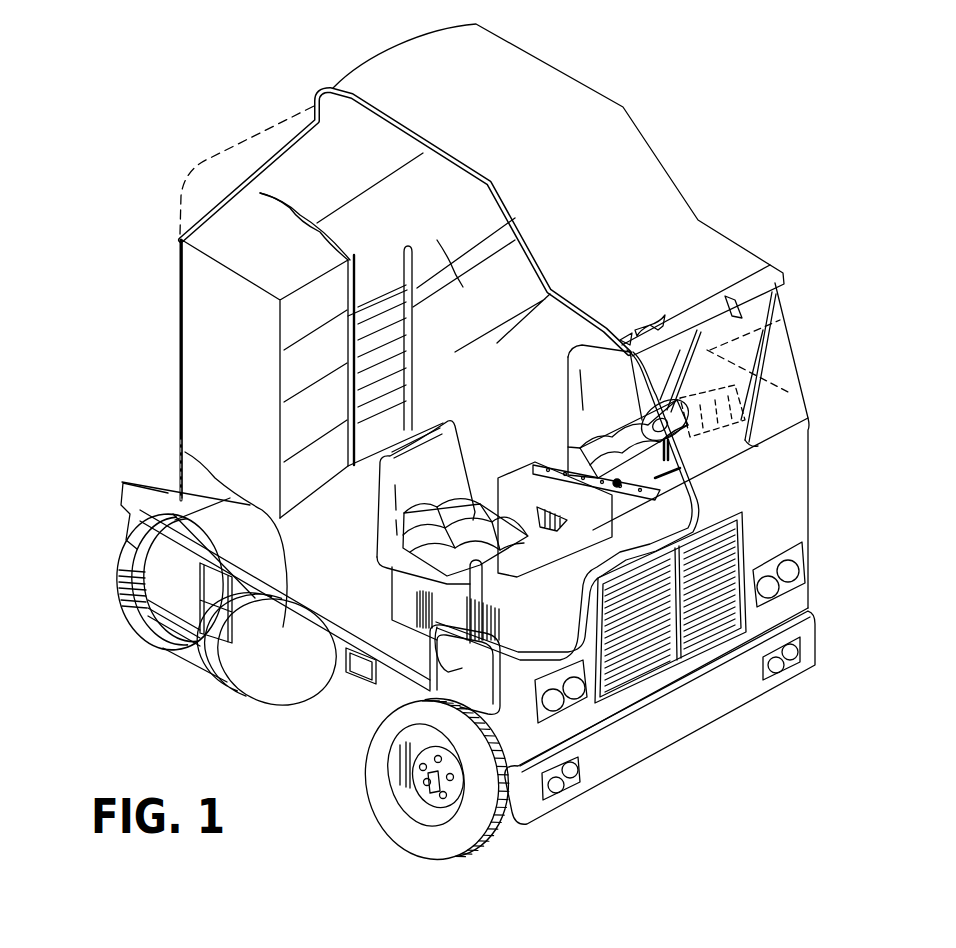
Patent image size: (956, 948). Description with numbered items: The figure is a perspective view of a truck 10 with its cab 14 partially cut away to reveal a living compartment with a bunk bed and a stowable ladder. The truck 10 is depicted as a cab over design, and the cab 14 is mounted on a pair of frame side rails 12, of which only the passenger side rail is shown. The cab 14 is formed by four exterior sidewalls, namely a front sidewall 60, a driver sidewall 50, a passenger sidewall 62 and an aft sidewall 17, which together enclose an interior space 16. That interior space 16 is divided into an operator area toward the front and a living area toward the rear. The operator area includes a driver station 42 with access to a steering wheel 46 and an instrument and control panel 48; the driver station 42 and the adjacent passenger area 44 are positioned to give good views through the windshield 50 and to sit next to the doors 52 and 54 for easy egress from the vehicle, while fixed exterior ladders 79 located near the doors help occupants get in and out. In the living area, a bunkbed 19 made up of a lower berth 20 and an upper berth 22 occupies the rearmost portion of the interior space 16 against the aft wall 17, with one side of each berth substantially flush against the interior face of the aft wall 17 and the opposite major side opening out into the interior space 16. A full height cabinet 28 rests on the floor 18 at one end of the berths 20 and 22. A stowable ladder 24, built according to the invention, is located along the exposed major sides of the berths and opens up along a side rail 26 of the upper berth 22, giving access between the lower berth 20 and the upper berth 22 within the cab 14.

The truck 10 is at (243, 726).
The frame side rails 12 is at (125, 540).
The cab 14 is at (703, 260).
The interior space 16 is at (529, 424).
The aft sidewall 17 is at (320, 167).
The floor 18 is at (342, 642).
The bunkbed 19 is at (529, 309).
The lower berth 20 is at (447, 330).
The upper berth 22 is at (440, 243).
The stowable ladder 24 is at (400, 338).
The side rail 26 is at (515, 235).
The full height cabinet 28 is at (300, 483).
The driver station 42 is at (636, 414).
The passenger area 44 is at (445, 494).
The steering wheel 46 is at (753, 443).
The instrument and control panel 48 is at (663, 478).
The windshield 50 is at (760, 385).
The door 52 is at (730, 352).
The door 54 is at (488, 688).
The front sidewall 60 is at (793, 518).
The passenger sidewall 62 is at (512, 634).
The fixed exterior ladders 79 is at (355, 690).